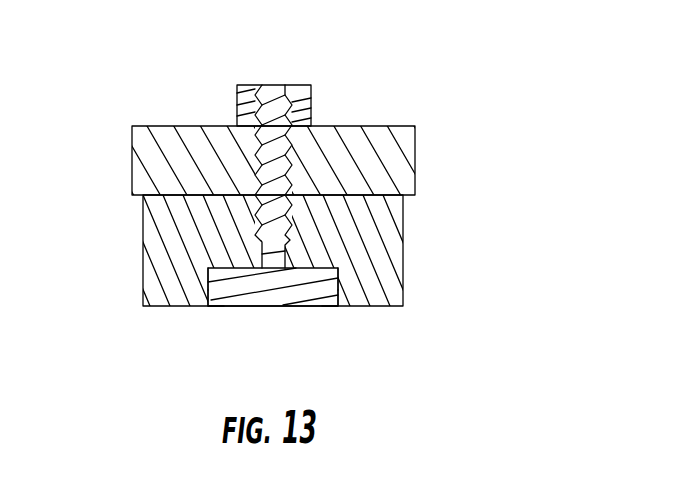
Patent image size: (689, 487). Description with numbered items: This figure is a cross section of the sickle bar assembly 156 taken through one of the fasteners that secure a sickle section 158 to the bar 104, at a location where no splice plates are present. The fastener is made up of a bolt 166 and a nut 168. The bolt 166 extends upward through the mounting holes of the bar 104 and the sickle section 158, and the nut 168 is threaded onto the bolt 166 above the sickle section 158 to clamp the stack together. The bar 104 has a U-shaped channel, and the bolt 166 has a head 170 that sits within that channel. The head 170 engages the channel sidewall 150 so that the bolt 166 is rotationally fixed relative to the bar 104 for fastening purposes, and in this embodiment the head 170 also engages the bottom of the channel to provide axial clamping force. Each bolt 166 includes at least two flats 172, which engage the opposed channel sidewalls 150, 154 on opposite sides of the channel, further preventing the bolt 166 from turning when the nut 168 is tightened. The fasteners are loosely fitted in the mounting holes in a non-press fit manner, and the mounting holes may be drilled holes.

The sickle bar assembly 156 is at (467, 78).
The sickle section 158 is at (162, 162).
The bar 104 is at (362, 222).
The nut 168 is at (311, 112).
The bolt 166 is at (278, 195).
The head 170 is at (283, 300).
The channel sidewall 154 is at (216, 306).
The channel sidewall 150 is at (332, 306).
The flat 172 is at (208, 283).